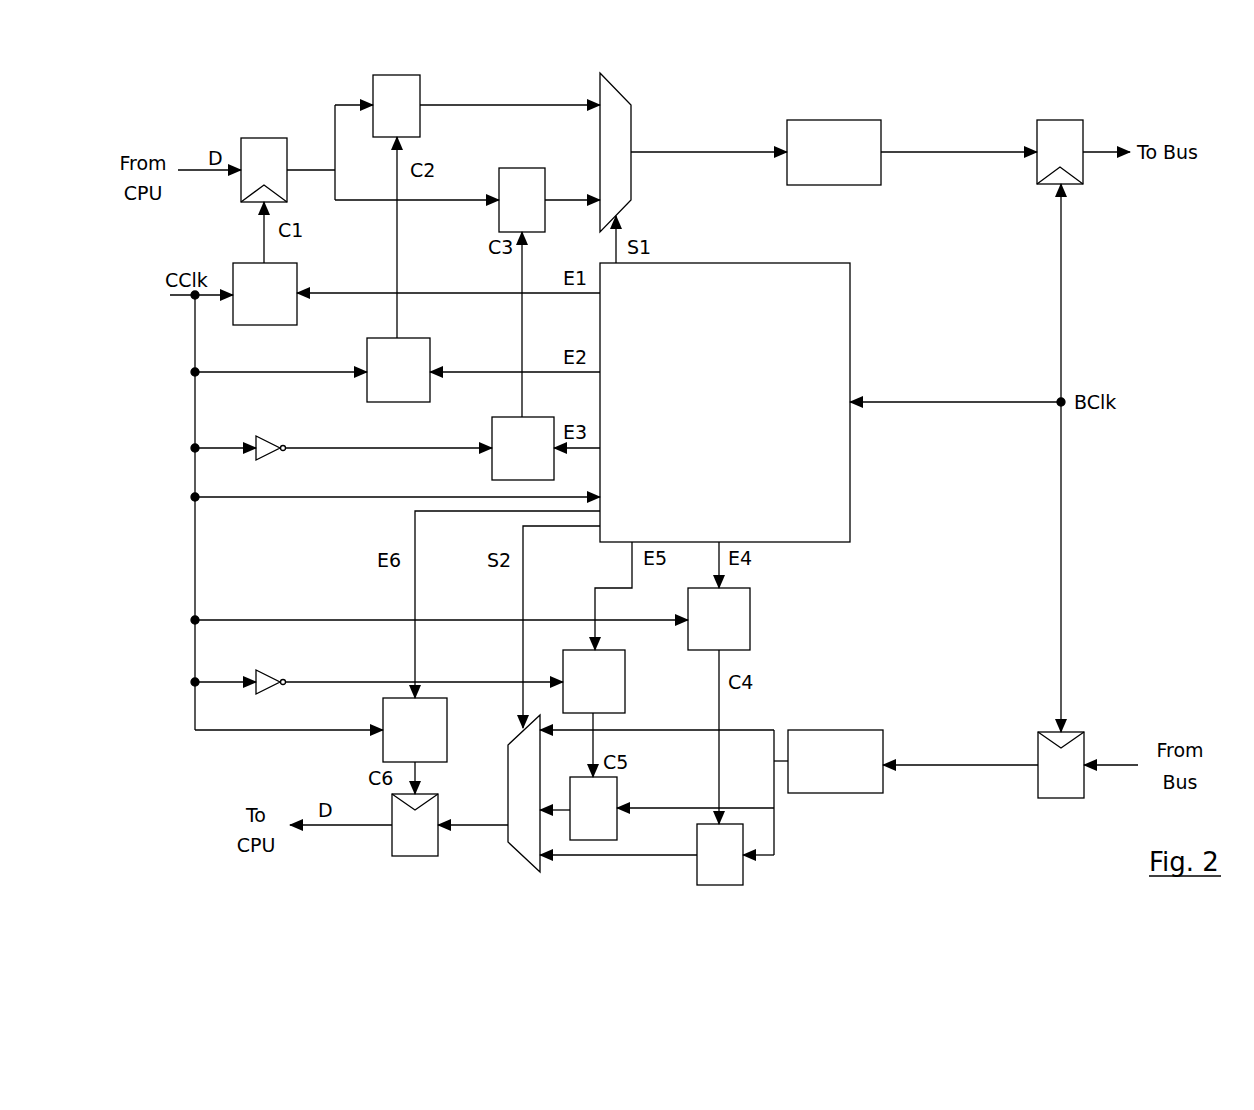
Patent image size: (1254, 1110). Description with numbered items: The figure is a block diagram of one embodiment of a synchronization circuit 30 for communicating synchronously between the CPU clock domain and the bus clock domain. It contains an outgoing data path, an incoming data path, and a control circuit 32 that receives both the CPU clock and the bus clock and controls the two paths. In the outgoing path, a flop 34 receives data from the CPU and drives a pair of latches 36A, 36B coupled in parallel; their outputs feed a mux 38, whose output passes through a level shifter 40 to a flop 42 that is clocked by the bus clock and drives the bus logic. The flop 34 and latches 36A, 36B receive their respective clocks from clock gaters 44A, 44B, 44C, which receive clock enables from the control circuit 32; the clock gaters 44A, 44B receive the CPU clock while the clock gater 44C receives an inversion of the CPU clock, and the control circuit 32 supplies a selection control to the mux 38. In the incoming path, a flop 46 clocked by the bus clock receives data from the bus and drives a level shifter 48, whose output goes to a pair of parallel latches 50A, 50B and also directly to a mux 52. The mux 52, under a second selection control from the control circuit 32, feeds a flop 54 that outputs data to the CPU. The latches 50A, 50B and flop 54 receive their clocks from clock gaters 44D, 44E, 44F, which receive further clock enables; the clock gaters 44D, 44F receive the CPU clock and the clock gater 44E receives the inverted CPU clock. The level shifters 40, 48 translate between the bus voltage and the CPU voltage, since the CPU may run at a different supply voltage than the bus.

The synchronization circuit 30 is at (900, 862).
The control circuit 32 is at (778, 413).
The flop 34 is at (291, 126).
The latch 36A is at (429, 77).
The latch 36B is at (536, 179).
The mux 38 is at (654, 147).
The level shifter 40 is at (855, 138).
The flop 42 is at (1094, 138).
The clock gater 44A is at (306, 281).
The clock gater 44B is at (440, 357).
The clock gater 44C is at (476, 447).
The clock gater 44D is at (769, 613).
The clock gater 44E is at (631, 681).
The clock gater 44F is at (450, 725).
The flop 46 is at (1039, 787).
The level shifter 48 is at (843, 741).
The latch 50A is at (749, 867).
The latch 50B is at (634, 803).
The mux 52 is at (497, 793).
The flop 54 is at (438, 837).